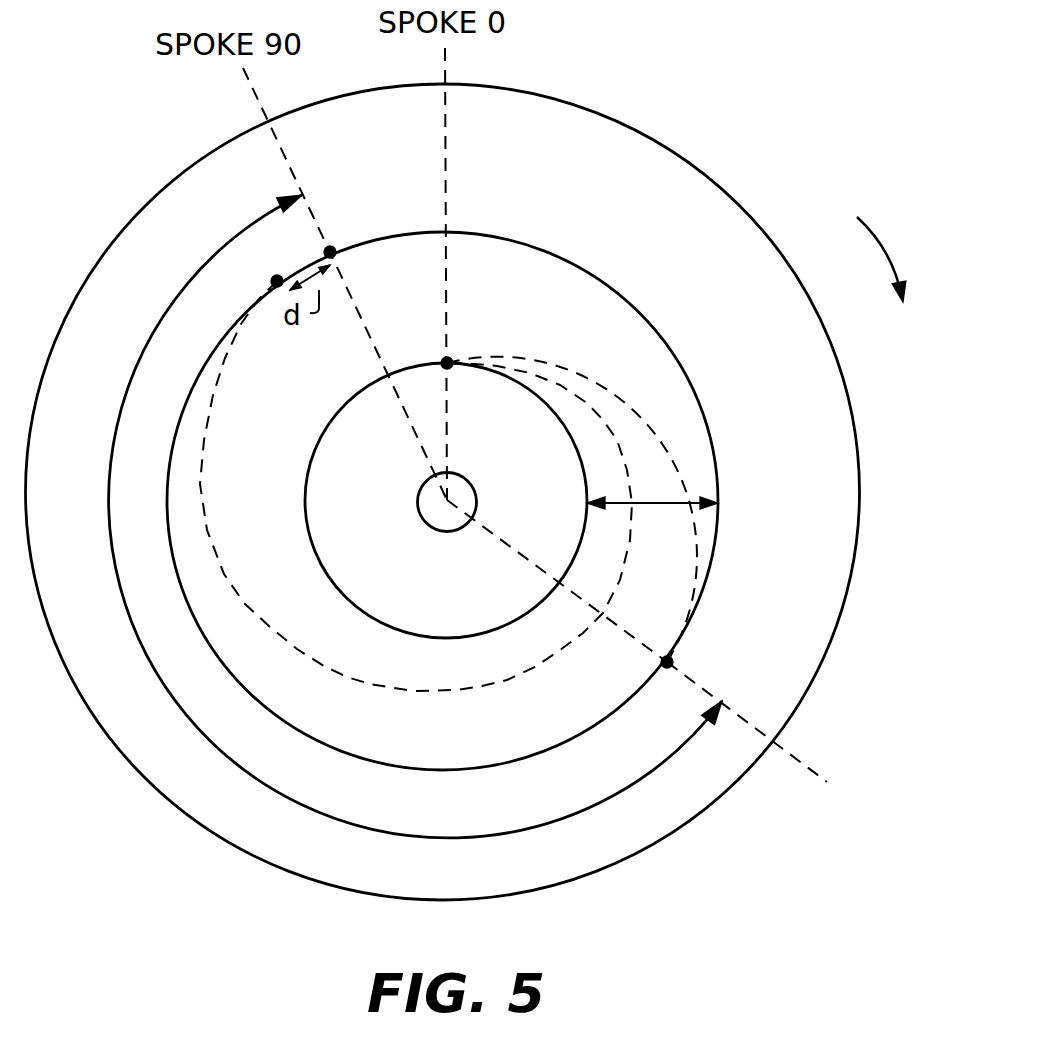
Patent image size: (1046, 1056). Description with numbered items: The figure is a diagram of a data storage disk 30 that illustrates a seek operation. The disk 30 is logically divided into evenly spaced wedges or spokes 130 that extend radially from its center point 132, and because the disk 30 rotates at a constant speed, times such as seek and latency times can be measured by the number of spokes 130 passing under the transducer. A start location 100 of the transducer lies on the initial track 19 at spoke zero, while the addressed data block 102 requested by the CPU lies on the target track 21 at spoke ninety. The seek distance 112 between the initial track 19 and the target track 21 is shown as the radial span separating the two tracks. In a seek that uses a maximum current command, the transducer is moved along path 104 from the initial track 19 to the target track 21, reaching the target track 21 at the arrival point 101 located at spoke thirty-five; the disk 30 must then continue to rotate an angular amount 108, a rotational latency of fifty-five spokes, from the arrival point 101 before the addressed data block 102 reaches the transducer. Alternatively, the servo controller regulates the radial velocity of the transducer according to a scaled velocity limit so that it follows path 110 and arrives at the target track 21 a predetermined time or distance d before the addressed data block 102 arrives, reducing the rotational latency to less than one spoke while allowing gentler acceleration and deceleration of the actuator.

The disk 30 is at (723, 190).
The target track 21 is at (590, 272).
The initial track 19 is at (308, 471).
The center point 132 is at (448, 500).
The start location 100 is at (450, 360).
The addressed data block 102 is at (333, 250).
The position at spoke 35 101 is at (670, 659).
The path 104 is at (664, 452).
The path 110 is at (388, 688).
The seek distance 112 is at (657, 502).
The angular amount 108 is at (382, 830).
The spokes 130 is at (803, 757).